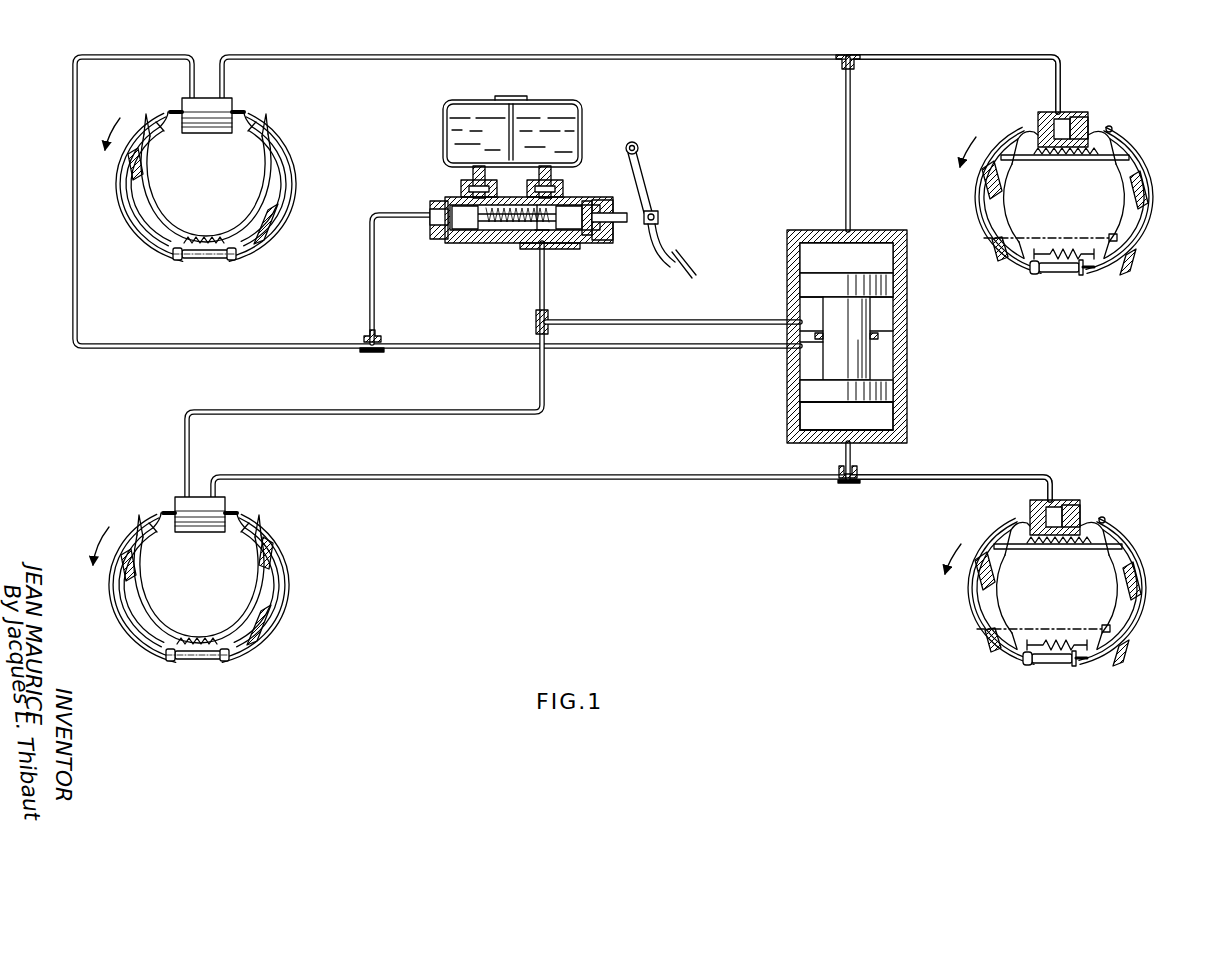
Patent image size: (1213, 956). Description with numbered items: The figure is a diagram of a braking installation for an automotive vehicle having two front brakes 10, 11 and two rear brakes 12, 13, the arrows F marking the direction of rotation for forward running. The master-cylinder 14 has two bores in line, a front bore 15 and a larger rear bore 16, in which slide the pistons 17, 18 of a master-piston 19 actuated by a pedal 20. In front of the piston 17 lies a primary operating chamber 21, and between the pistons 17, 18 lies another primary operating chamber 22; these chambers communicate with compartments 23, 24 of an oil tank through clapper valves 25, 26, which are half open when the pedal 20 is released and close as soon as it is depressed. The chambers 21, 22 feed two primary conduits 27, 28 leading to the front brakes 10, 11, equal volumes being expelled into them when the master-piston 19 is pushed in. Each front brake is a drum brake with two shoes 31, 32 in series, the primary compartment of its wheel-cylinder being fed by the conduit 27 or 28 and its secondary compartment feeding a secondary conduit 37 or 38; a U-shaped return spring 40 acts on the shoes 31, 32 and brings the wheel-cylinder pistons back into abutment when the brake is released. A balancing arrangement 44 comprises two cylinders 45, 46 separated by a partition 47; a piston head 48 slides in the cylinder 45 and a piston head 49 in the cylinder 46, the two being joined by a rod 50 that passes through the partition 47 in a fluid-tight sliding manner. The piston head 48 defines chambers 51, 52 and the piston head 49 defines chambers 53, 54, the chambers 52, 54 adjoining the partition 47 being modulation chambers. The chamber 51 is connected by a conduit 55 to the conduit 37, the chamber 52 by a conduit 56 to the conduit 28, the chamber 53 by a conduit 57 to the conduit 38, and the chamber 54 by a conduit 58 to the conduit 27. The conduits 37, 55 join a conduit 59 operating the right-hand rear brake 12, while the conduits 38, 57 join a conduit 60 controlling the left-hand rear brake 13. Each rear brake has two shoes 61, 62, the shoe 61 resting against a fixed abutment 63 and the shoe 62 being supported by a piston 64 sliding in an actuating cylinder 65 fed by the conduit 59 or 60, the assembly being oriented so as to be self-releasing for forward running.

The front brake 10 is at (213, 179).
The front brake 11 is at (203, 579).
The rear brake 12 is at (1071, 190).
The rear brake 13 is at (1060, 583).
The master-cylinder 14 is at (497, 246).
The front bore 15 is at (447, 208).
The rear bore 16 is at (576, 205).
The piston 17 is at (530, 236).
The piston 18 is at (606, 242).
The master-piston 19 is at (609, 210).
The pedal 20 is at (686, 268).
The primary operating chamber 21 is at (464, 226).
The primary operating chamber 22 is at (568, 232).
The compartment 23 is at (477, 130).
The compartment 24 is at (550, 130).
The clapper valve 25 is at (472, 182).
The clapper valve 26 is at (540, 183).
The primary conduit 27 is at (366, 344).
The primary conduit 28 is at (536, 336).
The primary shoe 31 is at (124, 383).
The secondary shoe 32 is at (280, 379).
The secondary conduit 37 is at (262, 56).
The secondary conduit 38 is at (291, 475).
The return spring 40 is at (202, 378).
The balancing arrangement 44 is at (910, 362).
The cylinder 45 is at (905, 258).
The cylinder 46 is at (905, 420).
The partition 47 is at (890, 331).
The piston head 48 is at (902, 290).
The piston head 49 is at (898, 392).
The rod 50 is at (862, 345).
The chamber 51 is at (812, 246).
The chamber 52 is at (808, 308).
The chamber 53 is at (806, 412).
The chamber 54 is at (806, 364).
The conduit 55 is at (845, 128).
The conduit 56 is at (660, 320).
The conduit 57 is at (852, 460).
The conduit 58 is at (665, 350).
The conduit 59 is at (982, 49).
The conduit 60 is at (884, 480).
The shoe 61 is at (983, 390).
The shoe 62 is at (1140, 390).
The fixed abutment 63 is at (1031, 308).
The piston 64 is at (1100, 306).
The actuating cylinder 65 is at (1073, 303).